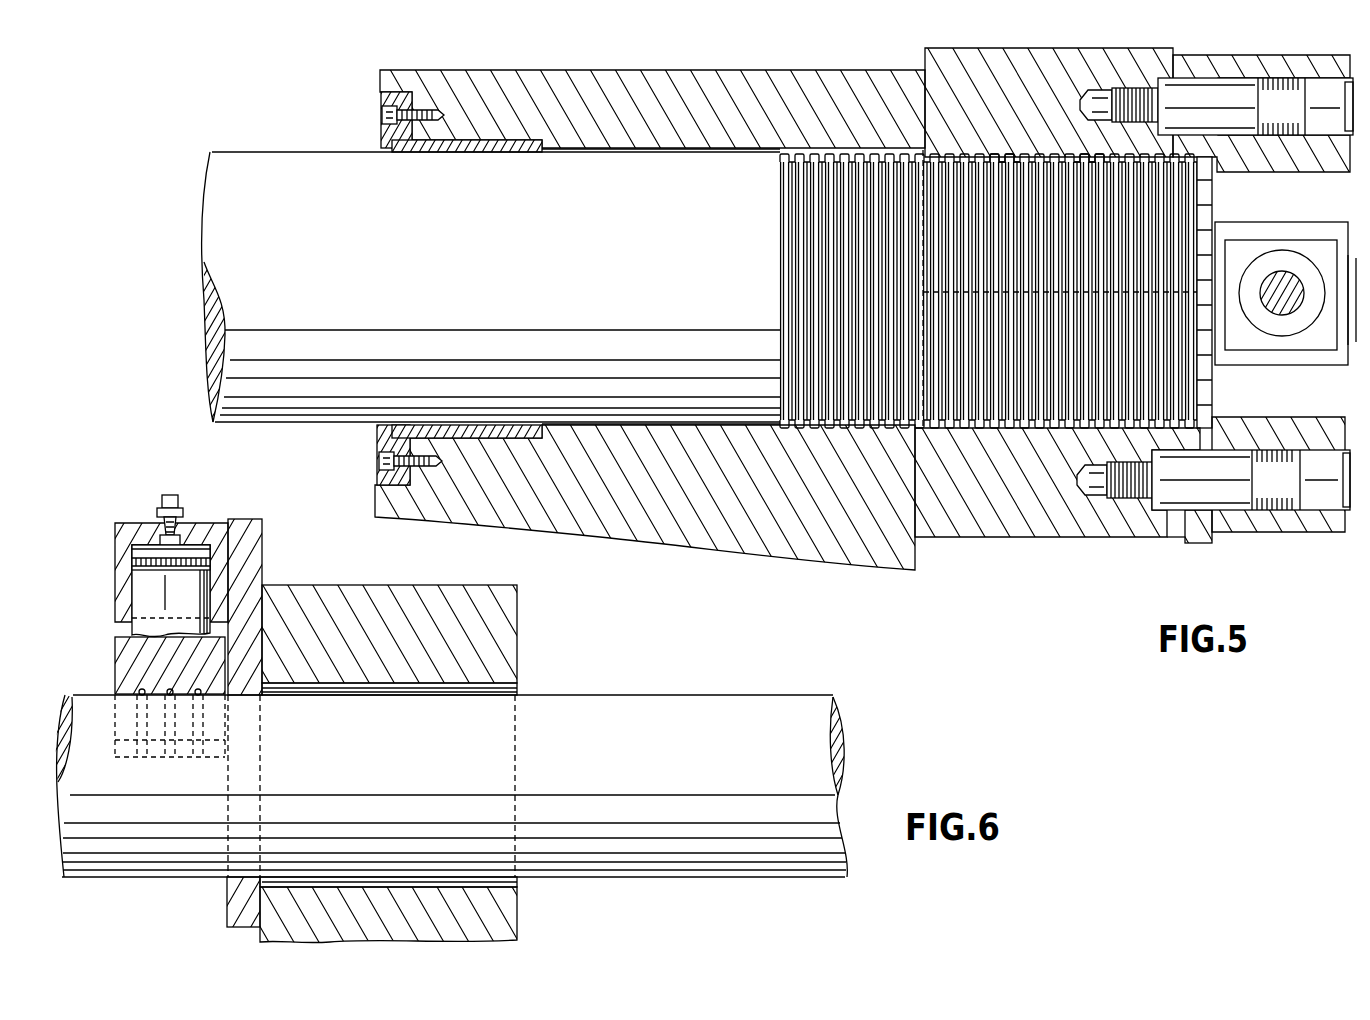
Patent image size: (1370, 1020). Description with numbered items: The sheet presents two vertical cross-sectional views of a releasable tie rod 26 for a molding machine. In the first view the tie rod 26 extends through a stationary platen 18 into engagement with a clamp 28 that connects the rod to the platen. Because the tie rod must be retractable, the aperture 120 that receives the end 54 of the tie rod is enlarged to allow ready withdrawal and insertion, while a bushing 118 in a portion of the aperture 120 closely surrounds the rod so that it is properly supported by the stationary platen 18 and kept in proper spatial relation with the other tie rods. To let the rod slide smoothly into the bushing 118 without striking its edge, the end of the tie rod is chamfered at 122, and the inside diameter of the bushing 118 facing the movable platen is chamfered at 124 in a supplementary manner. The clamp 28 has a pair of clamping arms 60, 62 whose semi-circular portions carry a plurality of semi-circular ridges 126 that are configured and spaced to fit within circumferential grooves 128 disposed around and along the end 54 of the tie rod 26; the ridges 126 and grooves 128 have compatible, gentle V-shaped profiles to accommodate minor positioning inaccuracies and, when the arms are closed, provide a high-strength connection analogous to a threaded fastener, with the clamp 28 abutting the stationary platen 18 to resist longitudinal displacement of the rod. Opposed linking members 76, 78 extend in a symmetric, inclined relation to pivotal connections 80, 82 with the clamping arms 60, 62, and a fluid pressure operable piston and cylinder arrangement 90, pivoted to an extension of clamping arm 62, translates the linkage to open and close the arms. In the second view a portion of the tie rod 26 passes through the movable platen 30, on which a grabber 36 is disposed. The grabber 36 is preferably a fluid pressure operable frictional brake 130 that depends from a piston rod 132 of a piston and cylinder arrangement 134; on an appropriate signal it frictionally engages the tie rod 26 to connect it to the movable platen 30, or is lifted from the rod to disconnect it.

In FIG. 5, the stationary platen 18 is at (608, 92).
In FIG. 5, the releasable tie rod 26 is at (464, 279).
In FIG. 6, the releasable tie rod 26 is at (392, 762).
In FIG. 5, the clamp 28 is at (881, 58).
In FIG. 6, the movable platen 30 is at (413, 585).
In FIG. 6, the grabber 36 is at (204, 506).
In FIG. 5, the end of the tie rod 54 is at (937, 266).
In FIG. 5, the clamping arm 60 is at (1036, 62).
In FIG. 5, the clamping arm 62 is at (1027, 523).
In FIG. 5, the linking member 76 is at (1296, 62).
In FIG. 5, the linking member 78 is at (1273, 532).
In FIG. 5, the pivotal connection 80 is at (1322, 92).
In FIG. 5, the pivotal connection 82 is at (1325, 490).
In FIG. 5, the piston and cylinder arrangement 90 is at (1292, 252).
In FIG. 5, the bushing 118 is at (492, 148).
In FIG. 5, the aperture 120 is at (653, 152).
In FIG. 5, the chamfer 122 is at (1200, 186).
In FIG. 5, the chamfer 124 is at (396, 152).
In FIG. 5, the semi-circular ridges 126 is at (1093, 153).
In FIG. 5, the circumferential grooves 128 is at (1077, 163).
In FIG. 6, the frictional brake 130 is at (138, 657).
In FIG. 6, the piston rod 132 is at (150, 590).
In FIG. 6, the piston and cylinder arrangement 134 is at (123, 558).